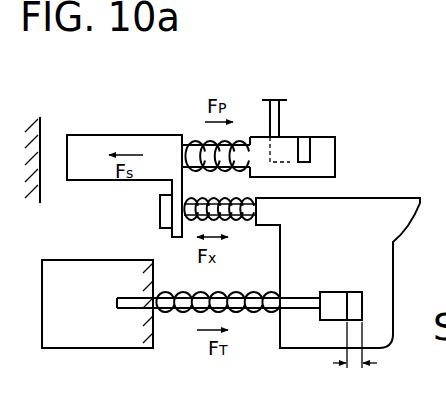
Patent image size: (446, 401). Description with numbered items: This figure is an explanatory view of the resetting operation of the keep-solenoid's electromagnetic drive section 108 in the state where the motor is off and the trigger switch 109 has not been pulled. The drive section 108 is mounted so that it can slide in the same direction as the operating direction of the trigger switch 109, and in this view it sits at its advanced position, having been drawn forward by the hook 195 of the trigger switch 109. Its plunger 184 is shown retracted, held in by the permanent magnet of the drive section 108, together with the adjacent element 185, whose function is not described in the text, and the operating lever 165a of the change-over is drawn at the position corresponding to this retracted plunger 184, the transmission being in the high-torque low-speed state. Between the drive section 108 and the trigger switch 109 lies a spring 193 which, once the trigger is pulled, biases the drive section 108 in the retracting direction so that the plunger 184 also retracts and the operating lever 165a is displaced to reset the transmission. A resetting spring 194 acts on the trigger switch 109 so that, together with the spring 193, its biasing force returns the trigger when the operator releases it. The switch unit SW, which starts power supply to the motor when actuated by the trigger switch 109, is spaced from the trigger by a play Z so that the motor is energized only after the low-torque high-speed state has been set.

The electromagnetic drive section 108 is at (97, 137).
The hook 195 is at (160, 209).
The shaft 185 is at (185, 143).
The plunger 184 is at (203, 143).
The operating lever 165a is at (278, 123).
The trigger switch 109 is at (375, 228).
The spring 193 is at (240, 220).
The resetting spring 194 is at (187, 313).
The switch unit SW is at (85, 270).
The play Z is at (355, 361).